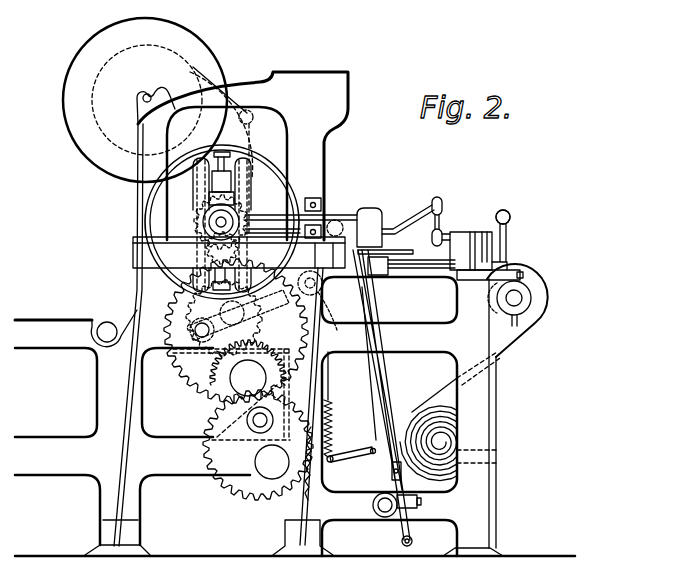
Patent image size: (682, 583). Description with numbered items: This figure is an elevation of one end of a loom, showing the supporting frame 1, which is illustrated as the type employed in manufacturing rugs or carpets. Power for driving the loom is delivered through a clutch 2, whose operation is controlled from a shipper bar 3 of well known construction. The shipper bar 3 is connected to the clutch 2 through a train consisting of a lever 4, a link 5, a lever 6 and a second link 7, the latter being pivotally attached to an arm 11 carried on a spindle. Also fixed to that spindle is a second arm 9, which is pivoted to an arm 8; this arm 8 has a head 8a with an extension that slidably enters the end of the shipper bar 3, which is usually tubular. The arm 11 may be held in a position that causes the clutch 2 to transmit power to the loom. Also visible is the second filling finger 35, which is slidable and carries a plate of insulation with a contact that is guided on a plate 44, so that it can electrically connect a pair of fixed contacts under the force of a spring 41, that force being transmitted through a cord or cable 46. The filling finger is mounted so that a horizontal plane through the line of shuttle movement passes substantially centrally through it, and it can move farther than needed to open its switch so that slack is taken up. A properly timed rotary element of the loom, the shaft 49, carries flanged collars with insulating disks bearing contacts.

The supporting frame 1 is at (137, 208).
The clutch 2 is at (292, 194).
The shipper bar 3 is at (503, 209).
The lever 4 is at (257, 223).
The link 5 is at (339, 222).
The lever 6 is at (393, 227).
The second link 7 is at (441, 208).
The arm 8 is at (507, 244).
The head 8a is at (510, 219).
The second arm 9 is at (486, 232).
The arm 11 is at (458, 238).
The second filling finger 35 is at (411, 266).
The spring 41 is at (333, 419).
The plate 44 is at (387, 244).
The cord or cable 46 is at (321, 287).
The shaft 49 is at (258, 425).